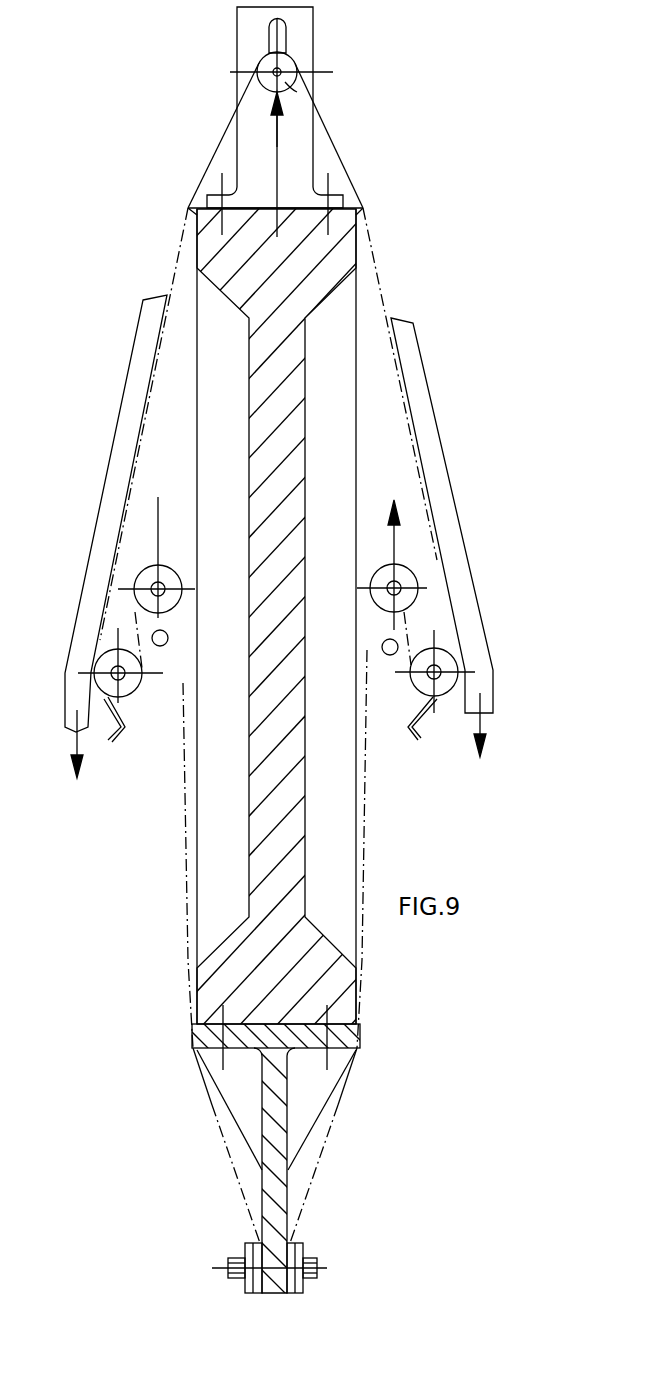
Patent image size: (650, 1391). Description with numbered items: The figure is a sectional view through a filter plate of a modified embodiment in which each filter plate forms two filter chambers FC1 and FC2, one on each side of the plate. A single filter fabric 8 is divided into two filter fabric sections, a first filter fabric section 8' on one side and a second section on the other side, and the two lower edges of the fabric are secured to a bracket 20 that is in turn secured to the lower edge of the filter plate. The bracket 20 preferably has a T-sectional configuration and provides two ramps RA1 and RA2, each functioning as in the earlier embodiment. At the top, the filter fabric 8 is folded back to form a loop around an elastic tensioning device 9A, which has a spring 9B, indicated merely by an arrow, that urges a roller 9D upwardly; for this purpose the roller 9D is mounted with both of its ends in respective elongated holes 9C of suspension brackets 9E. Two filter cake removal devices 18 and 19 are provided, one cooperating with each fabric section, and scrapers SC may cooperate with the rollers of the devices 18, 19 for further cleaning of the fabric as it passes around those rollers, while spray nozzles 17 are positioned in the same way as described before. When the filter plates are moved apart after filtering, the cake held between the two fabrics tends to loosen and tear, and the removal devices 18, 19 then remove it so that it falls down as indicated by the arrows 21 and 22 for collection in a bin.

The filter fabric 8 is at (290, 566).
The elastic tensioning device 9A is at (355, 41).
The spring 9B is at (277, 147).
The elongated holes 9C is at (268, 33).
The roller 9D is at (285, 82).
The suspension brackets 9E is at (243, 77).
The filter chamber FC1 is at (239, 521).
The filter chamber FC2 is at (333, 517).
The filter fabric section 8' is at (162, 725).
The spray nozzles 17 is at (168, 641).
The filter cake removal device 18 is at (154, 694).
The filter cake removal device 19 is at (392, 695).
The bracket 20 is at (278, 1187).
The arrow 21 is at (483, 727).
The arrow 22 is at (77, 740).
The scrapers SC is at (122, 742).
The ramp RA1 is at (225, 1101).
The ramp RA2 is at (325, 1107).